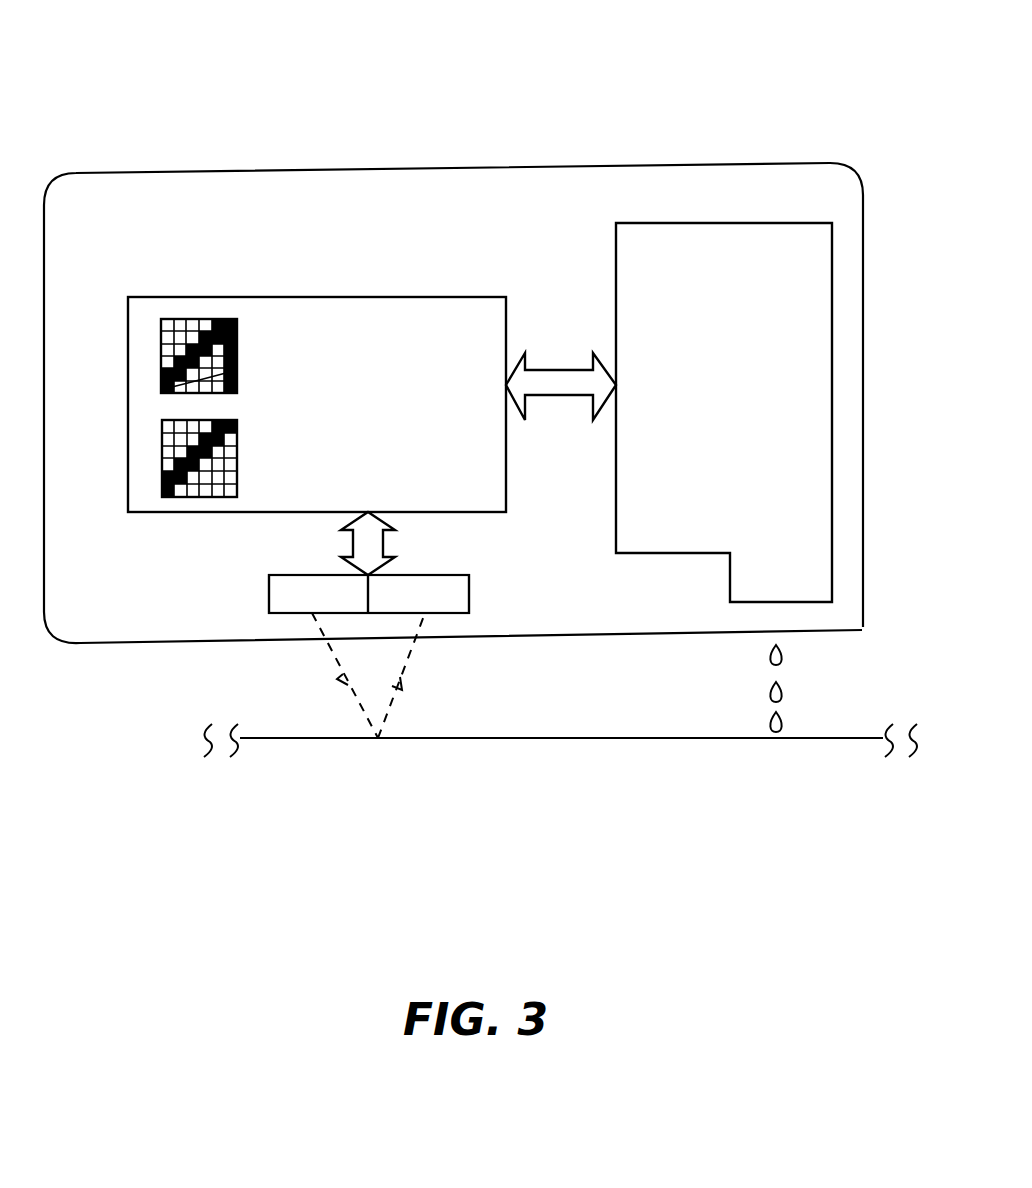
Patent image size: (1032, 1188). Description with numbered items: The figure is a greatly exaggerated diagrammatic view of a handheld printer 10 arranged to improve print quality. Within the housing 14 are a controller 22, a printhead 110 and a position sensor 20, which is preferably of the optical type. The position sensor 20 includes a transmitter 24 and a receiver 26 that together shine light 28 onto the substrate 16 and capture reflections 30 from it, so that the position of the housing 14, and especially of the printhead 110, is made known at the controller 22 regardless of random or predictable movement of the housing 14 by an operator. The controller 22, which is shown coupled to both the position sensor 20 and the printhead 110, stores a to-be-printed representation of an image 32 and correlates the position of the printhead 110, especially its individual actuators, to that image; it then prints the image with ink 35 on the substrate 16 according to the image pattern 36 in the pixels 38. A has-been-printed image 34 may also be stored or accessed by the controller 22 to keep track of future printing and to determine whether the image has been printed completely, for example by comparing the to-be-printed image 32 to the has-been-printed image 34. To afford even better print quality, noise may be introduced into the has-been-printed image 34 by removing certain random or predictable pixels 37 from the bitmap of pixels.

The handheld printer 10 is at (806, 97).
The housing 14 is at (827, 163).
The substrate 16 is at (712, 738).
The position sensor 20 is at (407, 570).
The controller 22 is at (400, 291).
The transmitter 24 is at (277, 581).
The receiver 26 is at (402, 582).
The light 28 is at (338, 664).
The reflections 30 is at (408, 655).
The to-be-printed representation of an image 32 is at (237, 358).
The has-been-printed image 34 is at (237, 463).
The ink 35 is at (784, 688).
The image pattern 36 is at (230, 336).
The pixels 37 is at (197, 445).
The pixels 38 is at (198, 331).
The printhead 110 is at (652, 222).